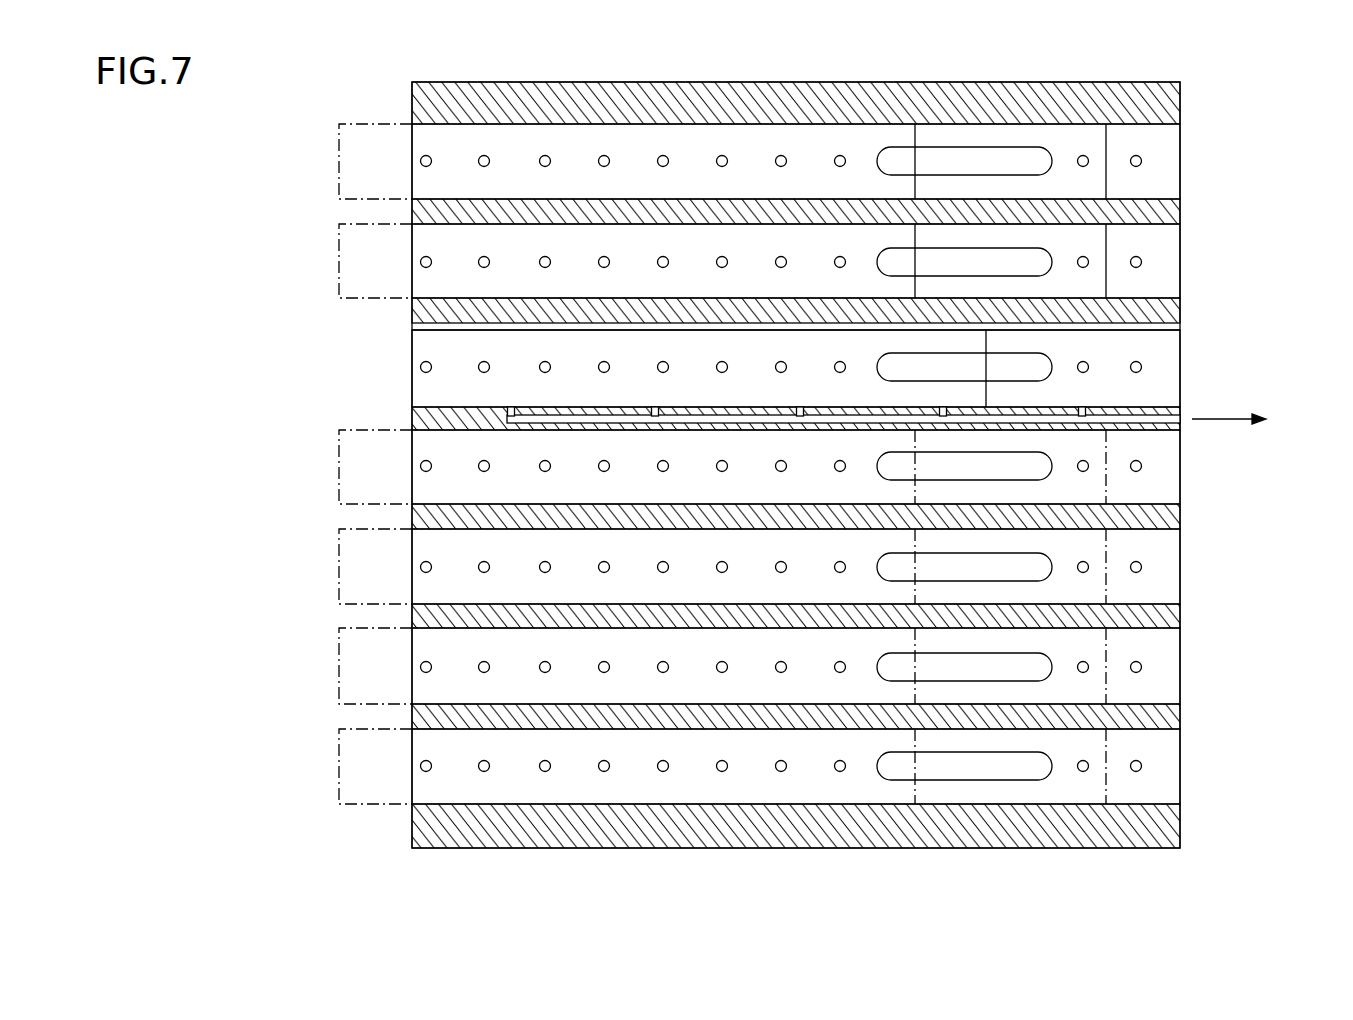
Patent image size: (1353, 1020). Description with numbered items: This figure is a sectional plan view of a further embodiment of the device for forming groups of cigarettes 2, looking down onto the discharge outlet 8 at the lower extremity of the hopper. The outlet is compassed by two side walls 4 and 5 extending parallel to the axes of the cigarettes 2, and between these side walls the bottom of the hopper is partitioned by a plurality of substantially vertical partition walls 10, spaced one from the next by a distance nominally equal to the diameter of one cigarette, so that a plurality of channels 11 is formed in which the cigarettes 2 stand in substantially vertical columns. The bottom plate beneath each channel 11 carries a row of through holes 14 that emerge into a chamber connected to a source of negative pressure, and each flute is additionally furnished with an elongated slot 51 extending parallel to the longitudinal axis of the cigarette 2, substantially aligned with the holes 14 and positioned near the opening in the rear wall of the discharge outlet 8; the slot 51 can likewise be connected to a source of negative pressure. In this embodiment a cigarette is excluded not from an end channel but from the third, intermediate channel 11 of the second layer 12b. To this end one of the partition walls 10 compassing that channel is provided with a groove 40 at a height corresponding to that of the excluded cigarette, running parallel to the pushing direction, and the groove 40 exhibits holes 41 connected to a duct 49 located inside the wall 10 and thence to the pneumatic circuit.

The cigarettes 2 is at (350, 478).
The side wall 4 is at (1095, 82).
The side wall 5 is at (1133, 848).
The discharge outlet 8 is at (292, 263).
The partition walls 10 is at (1160, 310).
The channels 11 is at (1128, 530).
The second layer 12b is at (356, 804).
The through holes 14 is at (782, 156).
The groove 40 is at (460, 407).
The through holes 41 is at (511, 407).
The duct 49 is at (1155, 418).
The slot 51 is at (962, 176).